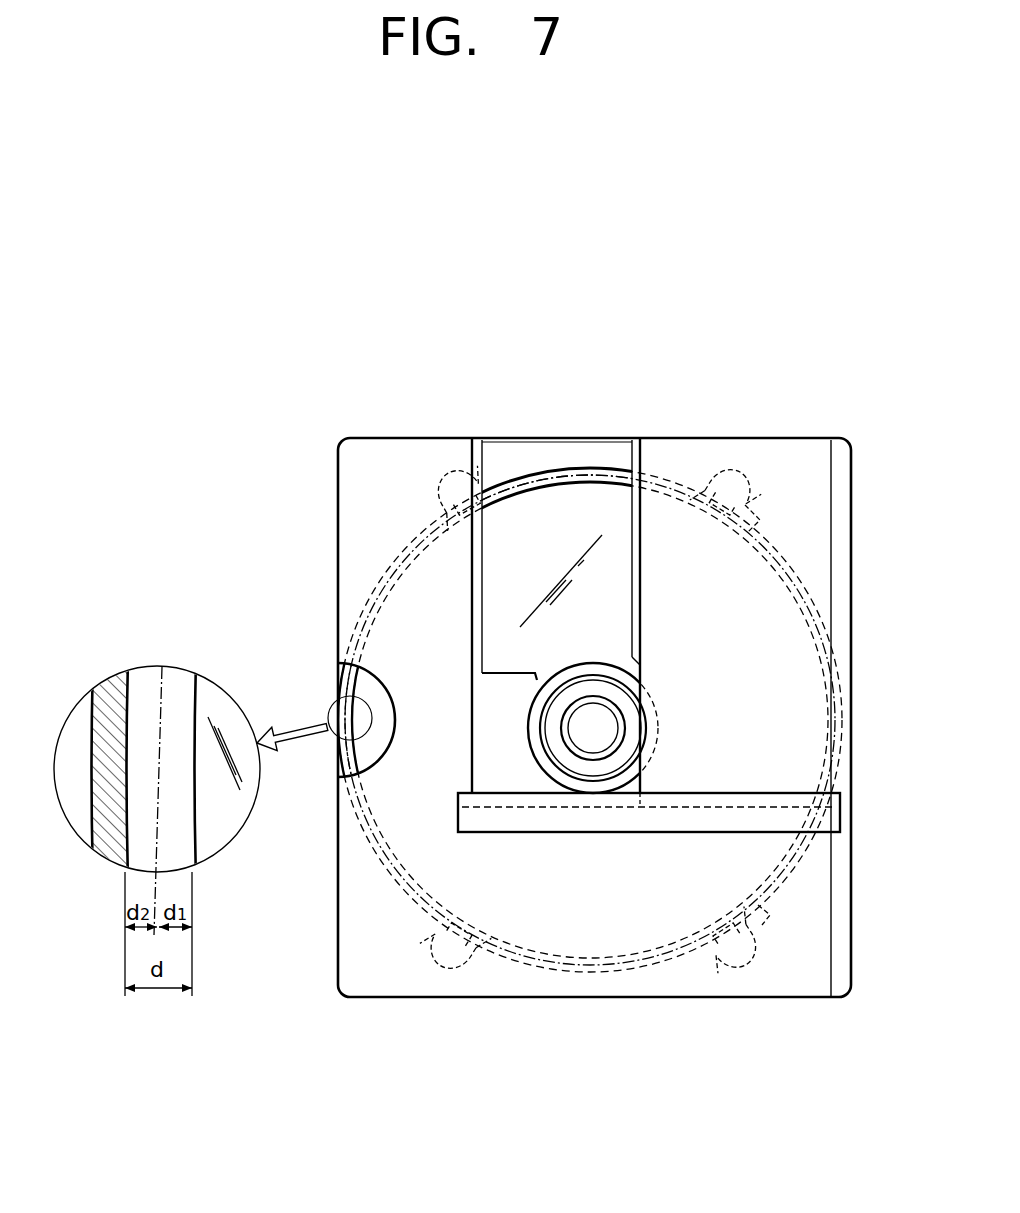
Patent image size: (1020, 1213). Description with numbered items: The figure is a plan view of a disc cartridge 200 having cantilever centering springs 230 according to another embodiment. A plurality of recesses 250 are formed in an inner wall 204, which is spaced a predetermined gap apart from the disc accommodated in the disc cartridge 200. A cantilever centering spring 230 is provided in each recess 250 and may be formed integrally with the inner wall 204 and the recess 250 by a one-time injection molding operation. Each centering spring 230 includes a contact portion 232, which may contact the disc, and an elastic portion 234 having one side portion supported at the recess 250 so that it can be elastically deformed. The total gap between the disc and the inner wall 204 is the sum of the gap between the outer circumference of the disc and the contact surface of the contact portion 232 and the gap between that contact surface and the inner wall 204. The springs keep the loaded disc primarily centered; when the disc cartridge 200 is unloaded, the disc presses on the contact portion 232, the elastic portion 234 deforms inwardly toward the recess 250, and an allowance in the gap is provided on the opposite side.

The disc cartridge 200 is at (805, 424).
The inner wall 204 is at (815, 607).
The recess 250 is at (730, 476).
The cantilever centering spring 230 is at (758, 516).
The contact portion 232 is at (723, 933).
The elastic portion 234 is at (763, 910).